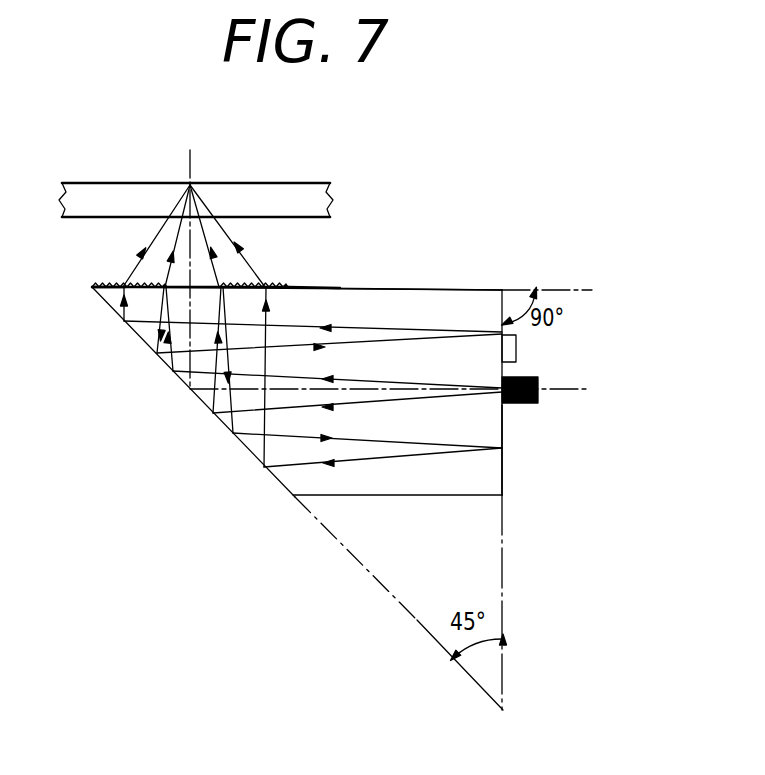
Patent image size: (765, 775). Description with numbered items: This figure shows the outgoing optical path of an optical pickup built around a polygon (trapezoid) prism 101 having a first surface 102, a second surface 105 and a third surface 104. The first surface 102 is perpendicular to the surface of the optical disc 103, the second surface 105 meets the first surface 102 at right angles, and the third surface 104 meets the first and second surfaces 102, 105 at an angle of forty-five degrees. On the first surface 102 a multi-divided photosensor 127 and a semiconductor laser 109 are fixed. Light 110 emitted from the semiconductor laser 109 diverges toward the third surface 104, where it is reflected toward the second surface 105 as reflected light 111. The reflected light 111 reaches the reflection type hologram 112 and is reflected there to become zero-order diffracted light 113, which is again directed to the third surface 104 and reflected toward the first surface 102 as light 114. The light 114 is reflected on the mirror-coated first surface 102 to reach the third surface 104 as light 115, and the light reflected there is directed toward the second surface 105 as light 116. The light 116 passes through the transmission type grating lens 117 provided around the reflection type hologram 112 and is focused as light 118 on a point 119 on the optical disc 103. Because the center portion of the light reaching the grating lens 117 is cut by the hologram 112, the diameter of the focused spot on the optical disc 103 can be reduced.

The polygon prism 101 is at (483, 298).
The first surface 102 is at (502, 480).
The optical disc 103 is at (307, 193).
The third surface 104 is at (243, 443).
The second surface 105 is at (452, 290).
The semiconductor laser 109 is at (538, 379).
The light emitted from the semiconductor laser 110 is at (398, 382).
The reflected light 111 is at (217, 377).
The reflection type hologram 112 is at (200, 285).
The 0-order diffracted light 113 is at (160, 318).
The light reflected toward the first surface 114 is at (345, 343).
The light reaching the third surface 115 is at (365, 328).
The light directed toward the second surface 116 is at (115, 292).
The transmission type grating lens 117 is at (113, 287).
The focused light 118 is at (143, 273).
The focal point 119 is at (233, 230).
The multi-divided photosensor 127 is at (516, 348).